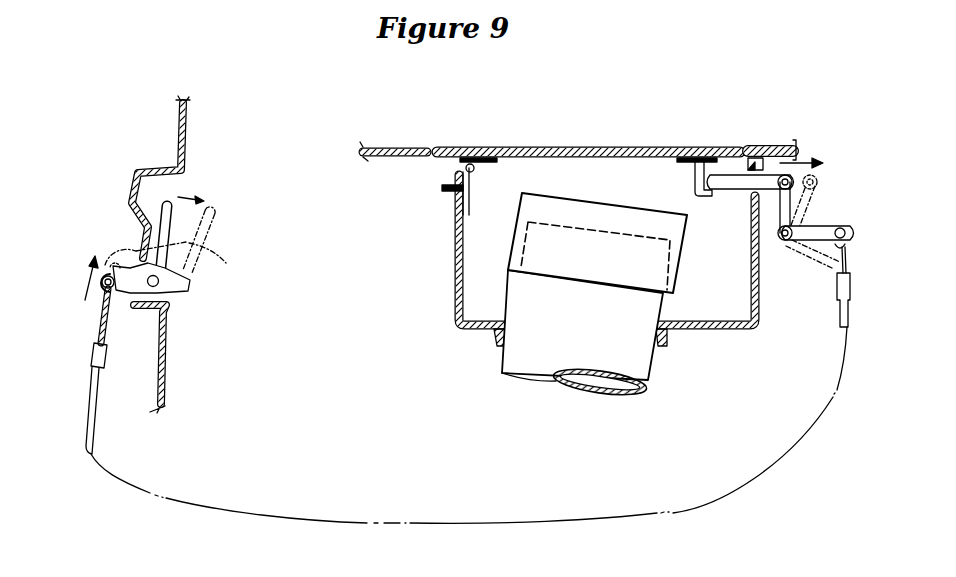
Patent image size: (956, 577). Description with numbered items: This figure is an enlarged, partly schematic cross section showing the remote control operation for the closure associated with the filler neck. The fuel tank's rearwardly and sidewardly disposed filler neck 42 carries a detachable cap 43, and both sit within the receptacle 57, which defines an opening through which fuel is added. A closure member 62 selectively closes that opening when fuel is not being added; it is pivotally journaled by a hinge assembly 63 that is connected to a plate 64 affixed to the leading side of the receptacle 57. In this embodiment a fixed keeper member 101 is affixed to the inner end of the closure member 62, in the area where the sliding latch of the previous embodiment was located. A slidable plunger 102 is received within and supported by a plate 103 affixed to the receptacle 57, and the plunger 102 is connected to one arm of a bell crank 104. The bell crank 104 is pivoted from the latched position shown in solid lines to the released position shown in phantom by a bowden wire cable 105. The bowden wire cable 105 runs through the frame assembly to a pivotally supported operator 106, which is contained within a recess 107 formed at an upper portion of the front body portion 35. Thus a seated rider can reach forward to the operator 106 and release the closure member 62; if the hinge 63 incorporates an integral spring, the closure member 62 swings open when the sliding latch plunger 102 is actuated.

The front portion 35 is at (187, 133).
The filler neck 42 is at (538, 370).
The detachable cap 43 is at (565, 207).
The receptacle 57 is at (451, 320).
The closure member 62 is at (590, 149).
The hinge assembly 63 is at (473, 162).
The plate 64 is at (458, 208).
The fixed keeper member 101 is at (692, 194).
The slidable plunger 102 is at (770, 143).
The plate 103 is at (743, 190).
The bell crank 104 is at (820, 224).
The bowden wire cable 105 is at (368, 518).
The pivotally supported operator 106 is at (167, 271).
The recess 107 is at (145, 188).